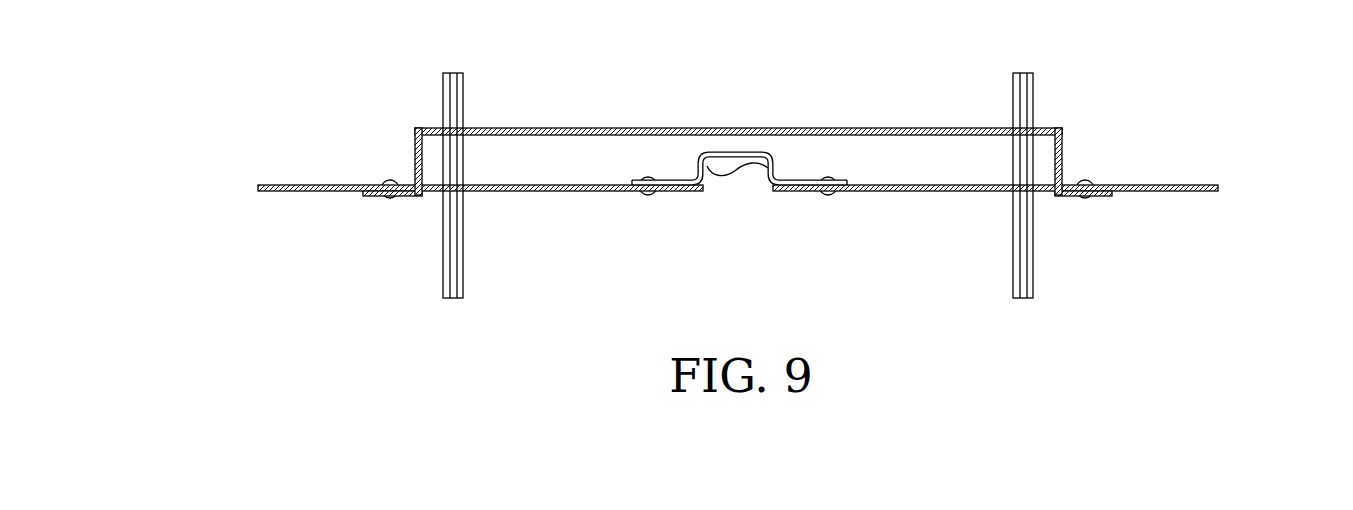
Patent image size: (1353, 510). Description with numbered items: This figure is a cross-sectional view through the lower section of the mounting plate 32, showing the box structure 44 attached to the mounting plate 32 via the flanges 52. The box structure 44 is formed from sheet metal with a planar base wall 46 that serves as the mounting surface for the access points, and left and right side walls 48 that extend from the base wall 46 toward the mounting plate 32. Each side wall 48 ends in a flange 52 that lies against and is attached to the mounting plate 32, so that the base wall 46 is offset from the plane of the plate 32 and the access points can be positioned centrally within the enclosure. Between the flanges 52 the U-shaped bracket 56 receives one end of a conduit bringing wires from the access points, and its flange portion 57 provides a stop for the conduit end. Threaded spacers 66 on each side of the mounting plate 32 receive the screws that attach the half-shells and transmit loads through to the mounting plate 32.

The mounting plate 32 is at (1172, 174).
The box structure 44 is at (739, 109).
The planar base wall 46 is at (607, 127).
The side walls 48 is at (415, 155).
The flanges 52 is at (378, 198).
The U-shaped bracket 56 is at (790, 163).
The flange portion 57 is at (740, 158).
The threaded spacers 66 is at (443, 98).